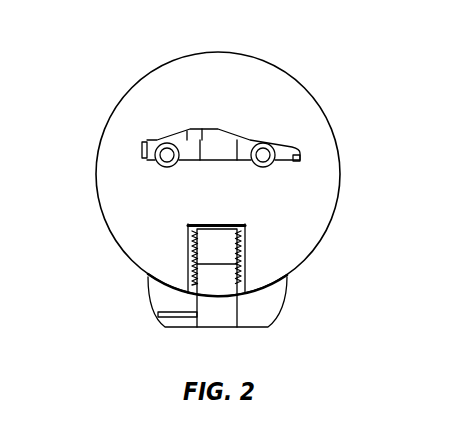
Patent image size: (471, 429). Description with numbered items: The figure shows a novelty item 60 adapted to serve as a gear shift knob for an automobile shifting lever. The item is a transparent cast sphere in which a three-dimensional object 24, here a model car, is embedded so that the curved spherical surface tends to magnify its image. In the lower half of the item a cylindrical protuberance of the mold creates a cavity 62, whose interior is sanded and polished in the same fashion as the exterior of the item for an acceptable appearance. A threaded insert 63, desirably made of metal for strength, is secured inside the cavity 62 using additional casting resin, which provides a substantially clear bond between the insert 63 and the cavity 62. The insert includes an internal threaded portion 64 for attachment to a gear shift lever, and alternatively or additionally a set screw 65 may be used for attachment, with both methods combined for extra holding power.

The novelty item 60 is at (87, 127).
The three-dimensional object 24 is at (241, 137).
The cavity 62 is at (254, 255).
The internal threaded portion 64 is at (188, 263).
The threaded insert 63 is at (273, 300).
The set screw 65 is at (157, 313).